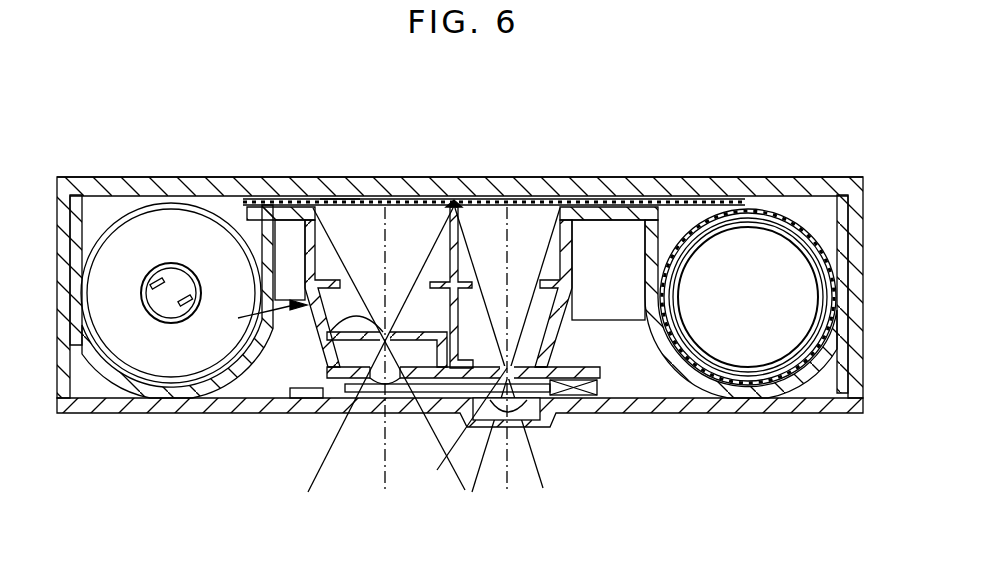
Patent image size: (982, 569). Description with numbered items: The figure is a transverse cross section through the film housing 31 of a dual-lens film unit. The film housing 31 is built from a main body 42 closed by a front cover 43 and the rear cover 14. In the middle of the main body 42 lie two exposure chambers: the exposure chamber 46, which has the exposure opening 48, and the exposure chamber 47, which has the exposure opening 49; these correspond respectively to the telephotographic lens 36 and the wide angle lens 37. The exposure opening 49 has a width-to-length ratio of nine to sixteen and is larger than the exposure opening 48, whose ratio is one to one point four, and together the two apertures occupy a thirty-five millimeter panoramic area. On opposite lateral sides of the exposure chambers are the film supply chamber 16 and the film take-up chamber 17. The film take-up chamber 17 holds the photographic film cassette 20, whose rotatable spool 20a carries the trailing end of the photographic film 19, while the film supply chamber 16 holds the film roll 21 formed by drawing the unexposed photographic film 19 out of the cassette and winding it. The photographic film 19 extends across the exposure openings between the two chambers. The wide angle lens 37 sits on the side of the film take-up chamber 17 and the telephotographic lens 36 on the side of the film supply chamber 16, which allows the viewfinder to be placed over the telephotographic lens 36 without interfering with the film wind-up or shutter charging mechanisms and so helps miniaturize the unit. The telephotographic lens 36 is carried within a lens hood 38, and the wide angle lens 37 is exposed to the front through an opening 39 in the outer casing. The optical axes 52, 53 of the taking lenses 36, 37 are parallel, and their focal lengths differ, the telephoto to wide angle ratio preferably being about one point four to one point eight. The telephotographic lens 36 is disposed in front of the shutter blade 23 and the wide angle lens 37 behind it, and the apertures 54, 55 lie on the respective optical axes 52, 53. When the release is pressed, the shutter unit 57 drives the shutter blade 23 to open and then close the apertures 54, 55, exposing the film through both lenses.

The rear cover 14 is at (460, 237).
The film supply chamber 16 is at (748, 245).
The film take-up chamber 17 is at (494, 167).
The photographic film 19 is at (339, 153).
The photographic film cassette 20 is at (171, 248).
The spool 20a is at (193, 230).
The film roll 21 is at (786, 236).
The shutter blade 23 is at (386, 355).
The film housing 31 is at (460, 122).
The telephotographic lens 36 is at (497, 450).
The wide angle lens 37 is at (463, 415).
The lens hood 38 is at (560, 430).
The opening 39 is at (340, 428).
The main body 42 is at (255, 318).
The front cover 43 is at (460, 459).
The exposure chamber 46 is at (507, 309).
The exposure chamber 47 is at (347, 247).
The exposure opening 48 is at (551, 237).
The exposure opening 49 is at (438, 236).
The optical axis 52 is at (512, 470).
The optical axis 53 is at (383, 467).
The aperture 54 is at (537, 355).
The aperture 55 is at (360, 341).
The shutter unit 57 is at (588, 430).